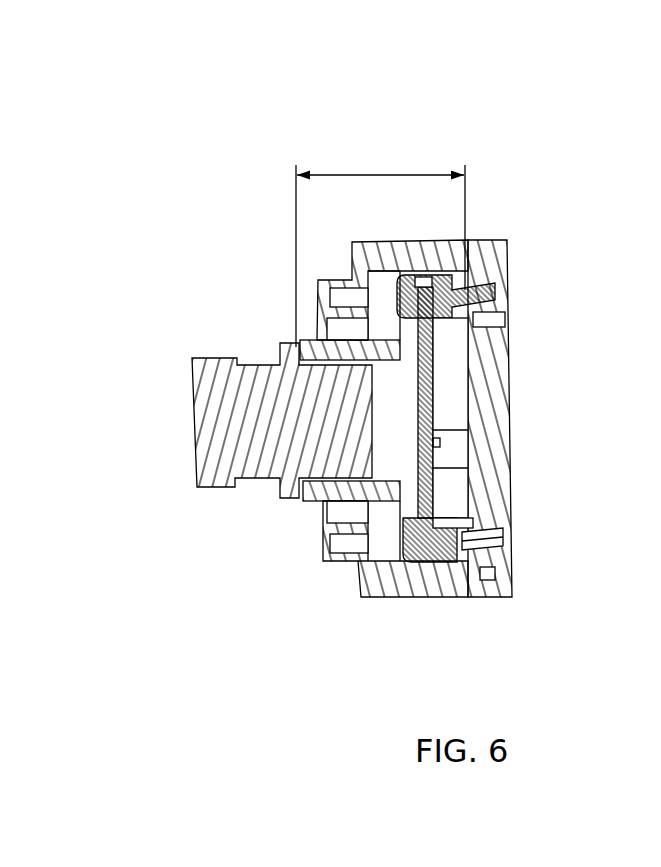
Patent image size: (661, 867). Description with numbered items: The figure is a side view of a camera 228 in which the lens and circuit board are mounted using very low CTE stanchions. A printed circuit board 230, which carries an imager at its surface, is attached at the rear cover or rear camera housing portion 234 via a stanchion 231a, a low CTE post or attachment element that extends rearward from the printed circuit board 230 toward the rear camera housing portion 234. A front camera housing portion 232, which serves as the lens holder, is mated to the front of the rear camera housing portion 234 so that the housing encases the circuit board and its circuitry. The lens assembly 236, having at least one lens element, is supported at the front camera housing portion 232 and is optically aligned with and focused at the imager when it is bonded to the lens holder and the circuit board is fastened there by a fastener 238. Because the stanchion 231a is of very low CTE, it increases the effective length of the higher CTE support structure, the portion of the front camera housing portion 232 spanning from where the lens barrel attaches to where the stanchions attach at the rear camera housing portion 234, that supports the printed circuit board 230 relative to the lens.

The camera 228 is at (198, 290).
The printed circuit board 230 is at (421, 476).
The stanchion 231a is at (480, 532).
The front camera housing portion 232 is at (367, 580).
The rear camera housing portion 234 is at (490, 363).
The lens assembly 236 is at (258, 465).
The fastener 238 is at (437, 540).